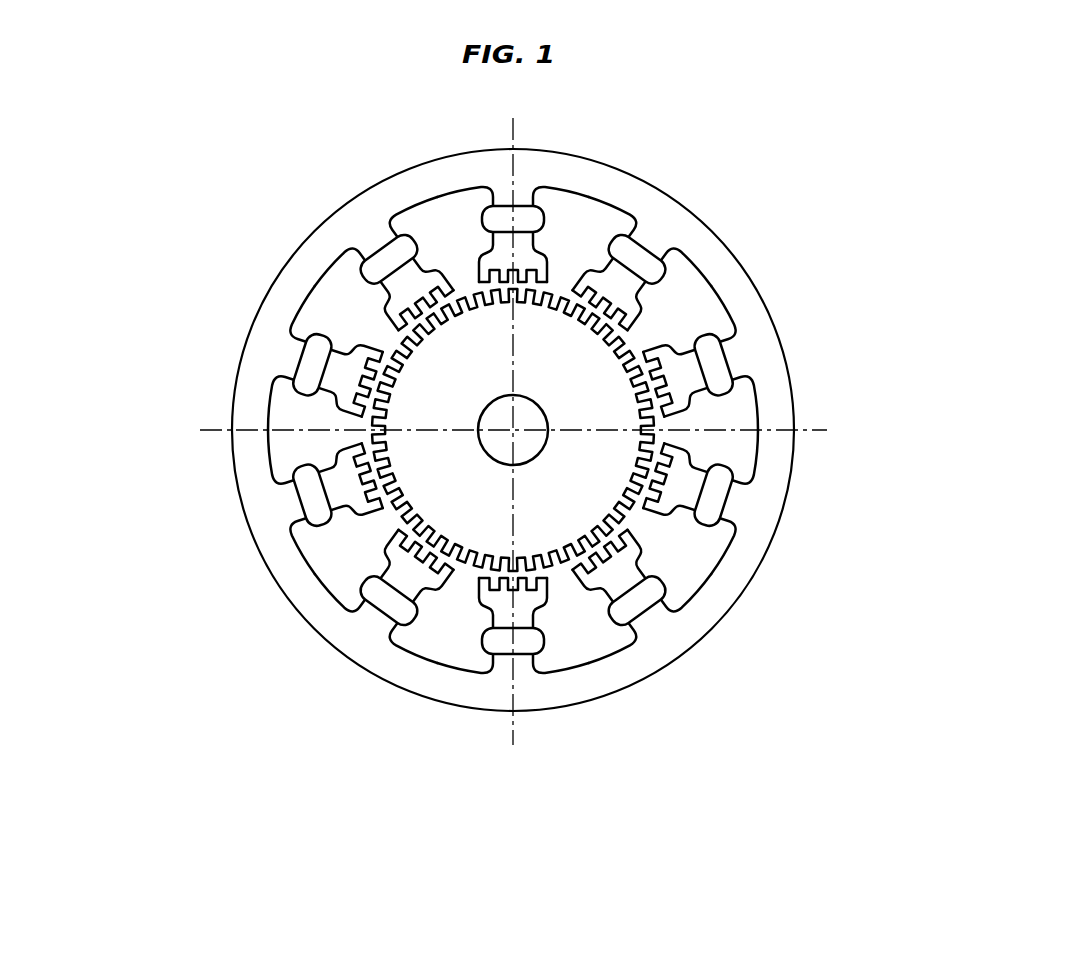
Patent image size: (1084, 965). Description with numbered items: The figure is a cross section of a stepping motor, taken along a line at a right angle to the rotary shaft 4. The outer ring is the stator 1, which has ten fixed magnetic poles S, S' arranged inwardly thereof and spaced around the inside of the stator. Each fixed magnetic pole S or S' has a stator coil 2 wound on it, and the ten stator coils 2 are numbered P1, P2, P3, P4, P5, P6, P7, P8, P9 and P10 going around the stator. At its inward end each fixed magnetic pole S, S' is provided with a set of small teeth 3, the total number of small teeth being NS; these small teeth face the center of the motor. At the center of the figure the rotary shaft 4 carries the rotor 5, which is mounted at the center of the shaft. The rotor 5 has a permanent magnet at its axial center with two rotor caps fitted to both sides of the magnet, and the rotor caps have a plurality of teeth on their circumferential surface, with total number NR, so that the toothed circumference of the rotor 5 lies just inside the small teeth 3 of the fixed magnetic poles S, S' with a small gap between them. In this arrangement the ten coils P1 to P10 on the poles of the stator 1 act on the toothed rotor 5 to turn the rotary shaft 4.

The stator 1 is at (423, 484).
The stator coil 2 is at (378, 257).
The small teeth 3 is at (357, 440).
The rotary shaft 4 is at (547, 456).
The rotor 5 is at (652, 438).
The fixed magnetic pole S is at (224, 490).
The fixed magnetic pole S' is at (291, 588).
The stator coil P1 is at (512, 218).
The stator coil P2 is at (628, 272).
The stator coil P3 is at (698, 369).
The stator coil P4 is at (698, 490).
The stator coil P5 is at (628, 588).
The stator coil P6 is at (512, 640).
The stator coil P7 is at (398, 588).
The stator coil P8 is at (327, 490).
The stator coil P9 is at (327, 369).
The stator coil P10 is at (398, 272).